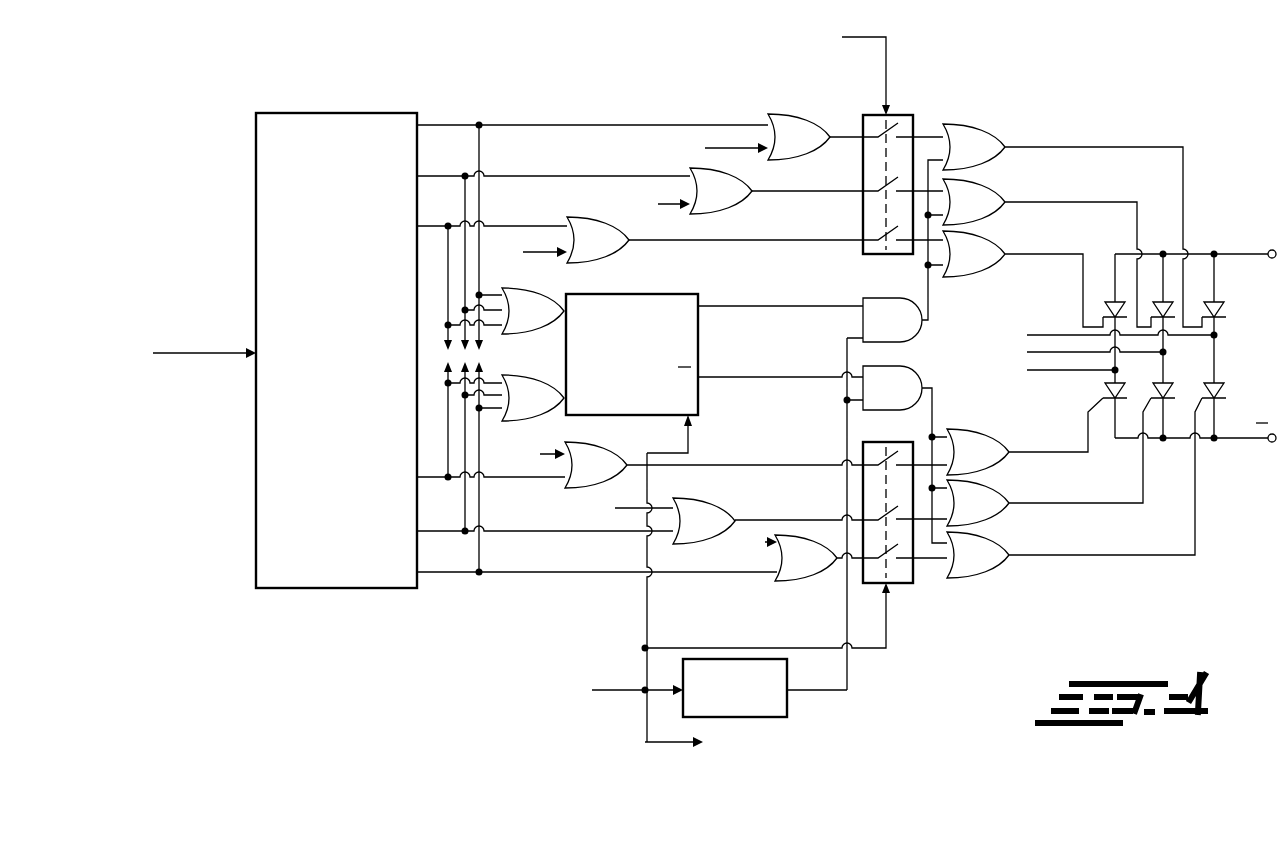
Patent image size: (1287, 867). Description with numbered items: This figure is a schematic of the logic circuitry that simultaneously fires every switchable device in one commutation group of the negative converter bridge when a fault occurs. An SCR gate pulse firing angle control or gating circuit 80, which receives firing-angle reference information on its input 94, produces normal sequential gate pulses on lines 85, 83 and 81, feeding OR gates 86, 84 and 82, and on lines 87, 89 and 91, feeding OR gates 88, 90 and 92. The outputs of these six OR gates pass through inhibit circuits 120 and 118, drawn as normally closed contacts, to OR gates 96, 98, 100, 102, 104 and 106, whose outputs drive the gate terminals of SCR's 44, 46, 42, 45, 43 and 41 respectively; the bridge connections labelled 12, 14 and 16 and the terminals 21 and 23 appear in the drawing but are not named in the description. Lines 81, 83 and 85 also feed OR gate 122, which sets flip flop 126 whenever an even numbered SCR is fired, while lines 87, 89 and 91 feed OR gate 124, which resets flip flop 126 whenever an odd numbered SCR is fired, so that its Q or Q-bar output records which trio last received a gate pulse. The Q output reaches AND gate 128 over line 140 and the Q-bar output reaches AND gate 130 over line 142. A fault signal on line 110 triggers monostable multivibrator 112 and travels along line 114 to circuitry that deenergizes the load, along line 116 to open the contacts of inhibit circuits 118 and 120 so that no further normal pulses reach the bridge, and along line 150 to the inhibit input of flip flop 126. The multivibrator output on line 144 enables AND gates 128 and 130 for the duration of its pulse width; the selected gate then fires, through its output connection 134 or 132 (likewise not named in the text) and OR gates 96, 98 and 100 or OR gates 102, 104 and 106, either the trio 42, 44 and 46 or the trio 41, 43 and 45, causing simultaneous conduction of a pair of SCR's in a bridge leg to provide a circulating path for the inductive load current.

The SCR gate pulse firing angle control 80 is at (299, 113).
The input 94 is at (220, 356).
The line 85 is at (430, 123).
The line 83 is at (430, 175).
The line 81 is at (428, 225).
The line 87 is at (430, 477).
The line 89 is at (430, 530).
The line 91 is at (430, 571).
The OR gate 86 is at (793, 114).
The OR gate 84 is at (745, 203).
The OR gate 82 is at (619, 253).
The OR gate 122 is at (521, 290).
The OR gate 124 is at (511, 375).
The flip flop 126 is at (632, 354).
The line 140 is at (762, 306).
The line 142 is at (758, 376).
The line 150 is at (692, 441).
The OR gate 88 is at (603, 446).
The OR gate 90 is at (716, 500).
The OR gate 92 is at (788, 583).
The inhibit circuit 120 is at (905, 117).
The line 116 is at (888, 60).
The line 144 is at (846, 621).
The AND gate 128 is at (890, 297).
The AND gate output line 134 is at (930, 294).
The AND gate 130 is at (905, 366).
The AND gate output line 132 is at (934, 406).
The inhibit circuit 118 is at (912, 584).
The OR gate 96 is at (984, 127).
The OR gate 98 is at (996, 186).
The OR gate 100 is at (998, 242).
The OR gate 102 is at (970, 432).
The OR gate 104 is at (1005, 495).
The OR gate 106 is at (1005, 548).
The line 110 is at (612, 691).
The monostable multivibrator 112 is at (745, 688).
The line 114 is at (668, 743).
The positive DC terminal 21 is at (1270, 260).
The negative DC terminal 23 is at (1272, 434).
The SCR 42 is at (1112, 304).
The SCR 46 is at (1166, 318).
The SCR 44 is at (1225, 308).
The SCR 45 is at (1102, 392).
The SCR 43 is at (1165, 382).
The SCR 41 is at (1222, 392).
The phase A line 12 is at (1044, 333).
The phase B line 14 is at (1062, 350).
The phase C line 16 is at (1064, 373).